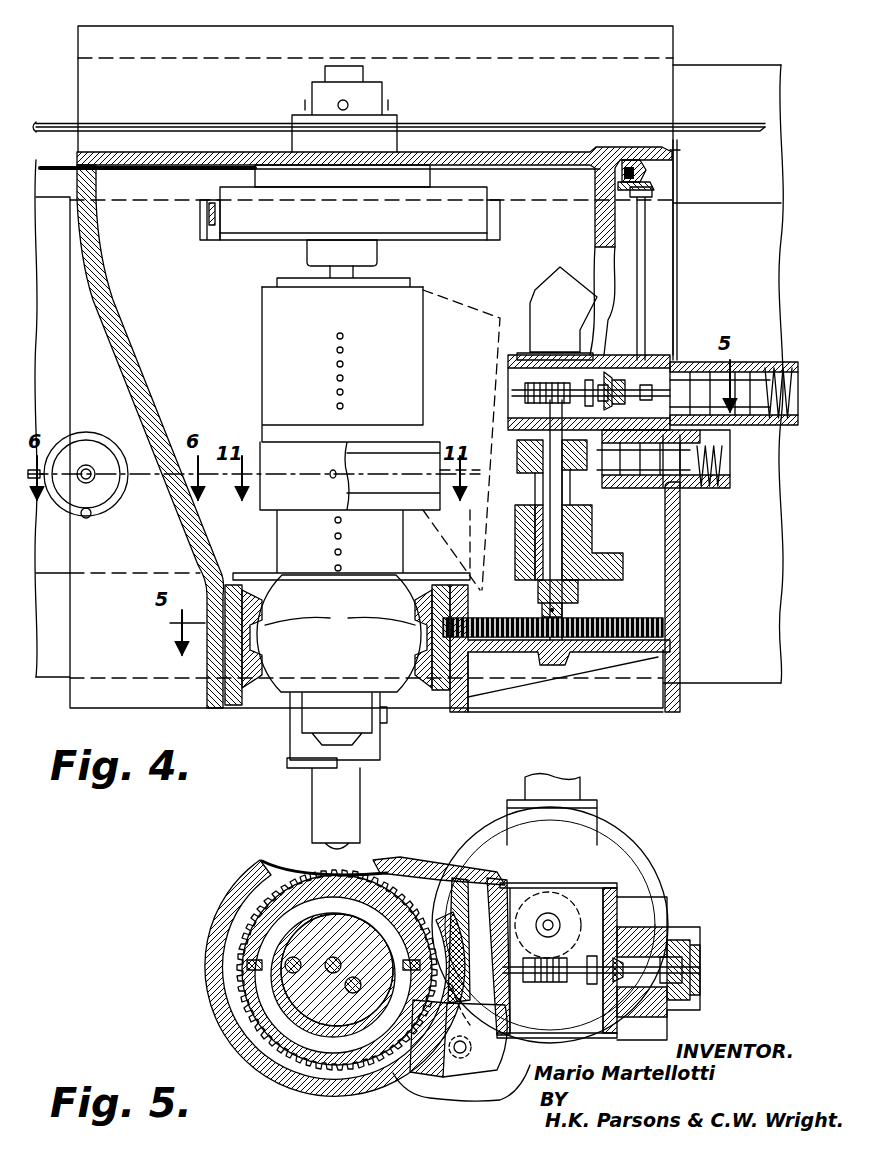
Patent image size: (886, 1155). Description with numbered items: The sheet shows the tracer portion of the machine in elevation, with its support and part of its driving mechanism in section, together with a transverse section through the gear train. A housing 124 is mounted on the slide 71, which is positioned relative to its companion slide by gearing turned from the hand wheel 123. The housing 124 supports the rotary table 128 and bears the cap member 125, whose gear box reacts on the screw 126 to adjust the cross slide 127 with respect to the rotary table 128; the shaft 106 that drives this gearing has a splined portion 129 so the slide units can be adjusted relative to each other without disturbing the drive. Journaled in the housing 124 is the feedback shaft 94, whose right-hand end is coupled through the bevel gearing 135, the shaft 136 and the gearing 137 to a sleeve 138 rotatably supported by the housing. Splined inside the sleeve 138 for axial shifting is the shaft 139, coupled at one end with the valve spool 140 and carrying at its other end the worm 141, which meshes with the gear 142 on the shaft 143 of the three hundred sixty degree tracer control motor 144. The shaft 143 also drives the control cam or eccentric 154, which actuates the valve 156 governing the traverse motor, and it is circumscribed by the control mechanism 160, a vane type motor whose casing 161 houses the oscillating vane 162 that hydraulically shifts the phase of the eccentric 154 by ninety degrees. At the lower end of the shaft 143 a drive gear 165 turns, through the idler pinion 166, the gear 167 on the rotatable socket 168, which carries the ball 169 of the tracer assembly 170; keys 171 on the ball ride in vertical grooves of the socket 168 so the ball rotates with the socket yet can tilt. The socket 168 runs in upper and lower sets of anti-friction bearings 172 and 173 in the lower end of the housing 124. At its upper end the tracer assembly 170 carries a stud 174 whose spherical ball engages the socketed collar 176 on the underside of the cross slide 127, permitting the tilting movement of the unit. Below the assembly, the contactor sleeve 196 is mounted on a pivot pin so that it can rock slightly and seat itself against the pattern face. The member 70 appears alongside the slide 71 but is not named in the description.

In FIG. 4, the housing 70 is at (728, 72).
In FIG. 4, the slide 71 is at (591, 28).
In FIG. 4, the feedback shaft 94 is at (137, 176).
In FIG. 4, the shaft 106 is at (48, 124).
In FIG. 4, the hand wheel 123 is at (68, 512).
In FIG. 4, the housing 124 is at (468, 157).
In FIG. 5, the housing 124 is at (208, 998).
In FIG. 4, the cap member 125 is at (367, 90).
In FIG. 4, the screw 126 is at (213, 242).
In FIG. 4, the cross slide 127 is at (440, 240).
In FIG. 4, the rotary table 128 is at (283, 200).
In FIG. 4, the splined portion 129 is at (185, 126).
In FIG. 4, the bevel gearing 135 is at (636, 183).
In FIG. 4, the shaft 136 is at (646, 278).
In FIG. 4, the gearing 137 is at (696, 352).
In FIG. 4, the sleeve 138 is at (610, 380).
In FIG. 4, the shaft 139 is at (643, 402).
In FIG. 4, the valve spool 140 is at (688, 380).
In FIG. 4, the worm 141 is at (540, 381).
In FIG. 5, the worm 141 is at (556, 984).
In FIG. 5, the gear 142 is at (550, 923).
In FIG. 4, the shaft 143 is at (550, 594).
In FIG. 5, the shaft 143 is at (647, 904).
In FIG. 4, the 360 degree tracer control motor 144 is at (598, 300).
In FIG. 4, the 360 degree control cam or eccentric 154 is at (515, 457).
In FIG. 4, the valve 156 is at (687, 474).
In FIG. 4, the control mechanism 160 is at (660, 545).
In FIG. 4, the casing 161 is at (622, 568).
In FIG. 4, the oscillating vane 162 is at (611, 556).
In FIG. 4, the drive gear 165 is at (664, 629).
In FIG. 5, the drive gear 165 is at (463, 905).
In FIG. 5, the idler pinion 166 is at (420, 1078).
In FIG. 4, the gear 167 is at (222, 652).
In FIG. 5, the gear 167 is at (353, 1072).
In FIG. 4, the rotatable socket 168 is at (260, 694).
In FIG. 4, the ball 169 is at (283, 694).
In FIG. 4, the tracer assembly 170 is at (277, 539).
In FIG. 4, the keys 171 is at (412, 650).
In FIG. 4, the upper anti-friction bearings 172 is at (200, 576).
In FIG. 4, the lower anti-friction bearings 173 is at (466, 698).
In FIG. 4, the stud 174 is at (328, 271).
In FIG. 4, the socketed collar 176 is at (378, 258).
In FIG. 4, the contactor sleeve 196 is at (311, 826).